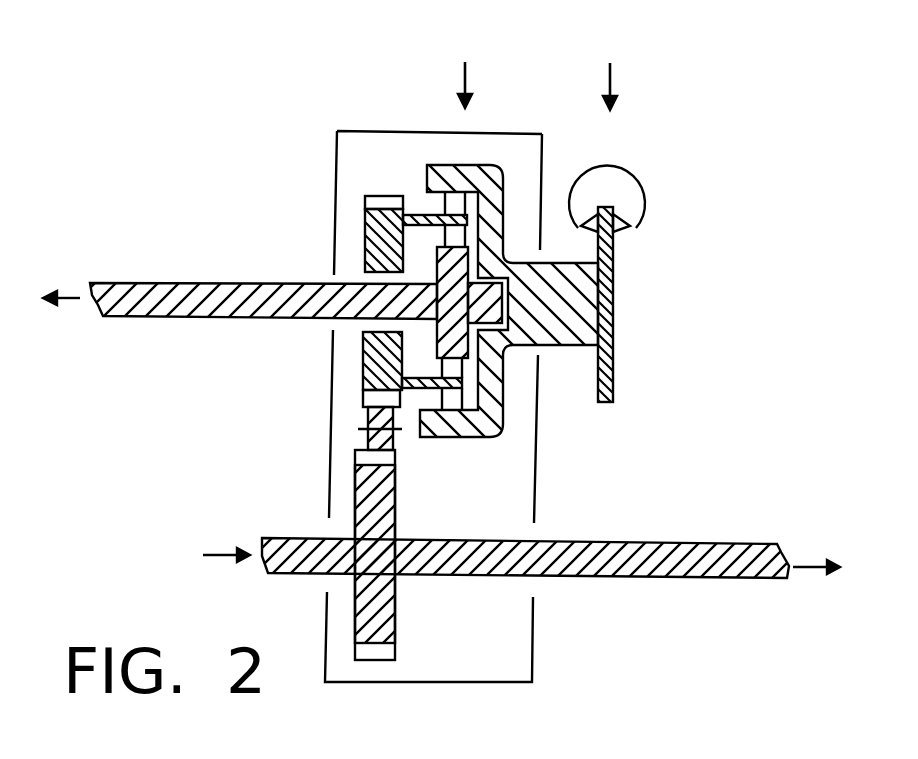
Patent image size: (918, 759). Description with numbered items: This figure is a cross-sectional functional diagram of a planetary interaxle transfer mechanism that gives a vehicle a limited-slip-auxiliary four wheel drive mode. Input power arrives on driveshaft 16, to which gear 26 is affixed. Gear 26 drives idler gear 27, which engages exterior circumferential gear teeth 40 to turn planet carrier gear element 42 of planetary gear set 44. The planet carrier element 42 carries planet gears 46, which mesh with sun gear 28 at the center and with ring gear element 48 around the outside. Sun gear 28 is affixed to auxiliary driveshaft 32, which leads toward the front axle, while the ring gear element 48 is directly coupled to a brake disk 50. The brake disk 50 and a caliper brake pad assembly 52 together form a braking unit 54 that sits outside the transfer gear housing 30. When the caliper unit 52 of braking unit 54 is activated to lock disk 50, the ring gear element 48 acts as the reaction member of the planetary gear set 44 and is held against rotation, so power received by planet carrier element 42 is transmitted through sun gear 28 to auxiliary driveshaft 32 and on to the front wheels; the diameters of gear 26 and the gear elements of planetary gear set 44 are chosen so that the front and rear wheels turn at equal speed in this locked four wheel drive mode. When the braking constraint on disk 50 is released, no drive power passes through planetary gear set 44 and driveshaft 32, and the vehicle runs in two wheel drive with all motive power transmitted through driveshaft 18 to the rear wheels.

The driveshaft 16 is at (312, 575).
The driveshaft 18 is at (643, 581).
The gear 26 is at (355, 483).
The idler gear 27 is at (360, 428).
The sun gear 28 is at (437, 272).
The transfer gear housing 30 is at (370, 130).
The auxiliary driveshaft 32 is at (203, 283).
The exterior circumferential gear teeth 40 is at (365, 202).
The planet carrier gear element 42 is at (365, 230).
The planetary gear set 44 is at (463, 67).
The planet gears 46 is at (445, 200).
The ring gear element 48 is at (460, 164).
The brake disk 50 is at (613, 252).
The caliper brake pad assembly 52 is at (638, 168).
The braking unit 54 is at (606, 69).